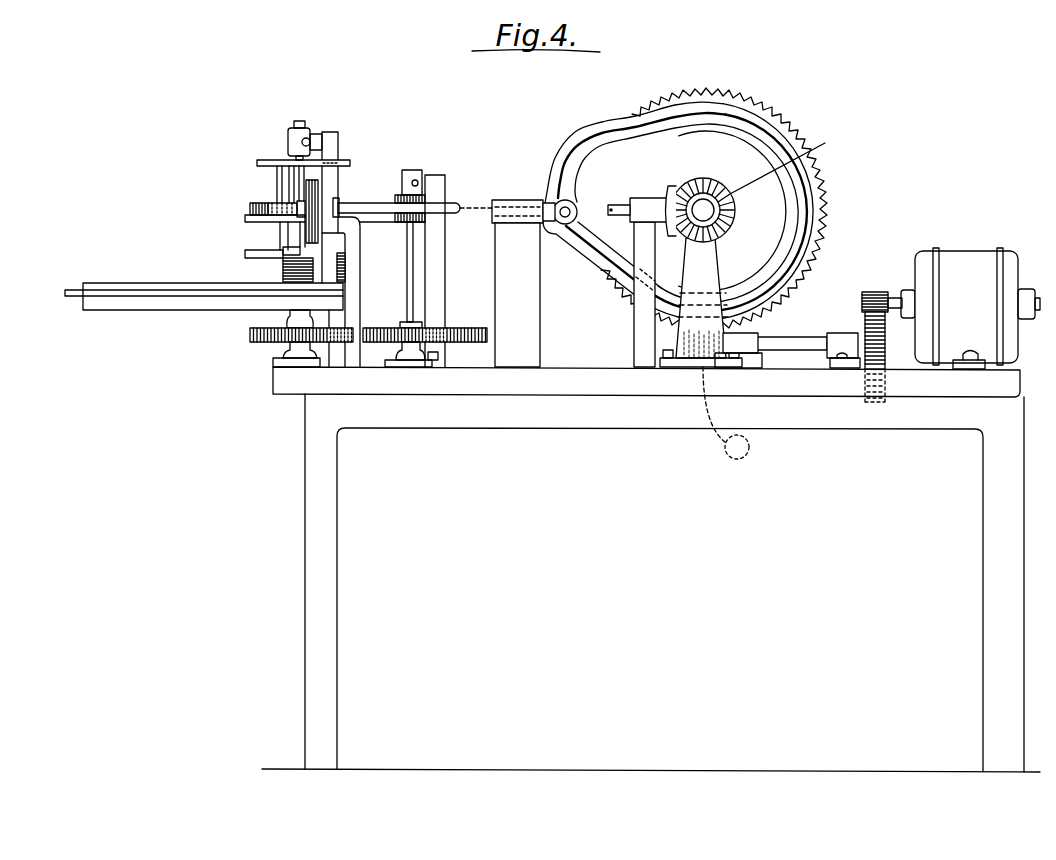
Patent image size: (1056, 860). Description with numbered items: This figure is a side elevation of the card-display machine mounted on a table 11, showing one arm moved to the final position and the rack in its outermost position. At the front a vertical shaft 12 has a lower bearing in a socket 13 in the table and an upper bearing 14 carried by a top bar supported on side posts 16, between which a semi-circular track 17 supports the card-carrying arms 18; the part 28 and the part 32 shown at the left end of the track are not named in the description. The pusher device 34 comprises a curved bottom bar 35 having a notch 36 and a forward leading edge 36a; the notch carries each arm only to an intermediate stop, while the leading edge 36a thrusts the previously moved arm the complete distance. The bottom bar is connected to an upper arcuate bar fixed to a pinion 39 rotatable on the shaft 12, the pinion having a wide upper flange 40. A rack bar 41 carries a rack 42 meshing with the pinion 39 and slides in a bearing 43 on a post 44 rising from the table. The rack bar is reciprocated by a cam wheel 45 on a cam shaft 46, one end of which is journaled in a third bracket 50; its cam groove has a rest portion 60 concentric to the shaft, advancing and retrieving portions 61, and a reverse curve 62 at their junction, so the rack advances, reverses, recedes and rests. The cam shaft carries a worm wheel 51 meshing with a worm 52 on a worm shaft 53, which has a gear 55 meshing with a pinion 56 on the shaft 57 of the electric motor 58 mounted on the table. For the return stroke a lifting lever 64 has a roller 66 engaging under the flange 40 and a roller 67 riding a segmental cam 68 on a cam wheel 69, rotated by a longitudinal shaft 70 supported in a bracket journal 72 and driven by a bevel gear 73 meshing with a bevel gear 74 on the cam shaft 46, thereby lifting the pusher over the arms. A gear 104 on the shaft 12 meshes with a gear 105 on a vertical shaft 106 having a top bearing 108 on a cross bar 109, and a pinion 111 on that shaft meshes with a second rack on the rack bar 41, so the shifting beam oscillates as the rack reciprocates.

The table 11 is at (599, 440).
The vertical shaft 12 is at (305, 122).
The socket 13 is at (291, 352).
The upper bearing 14 is at (288, 137).
The side posts 16 is at (338, 180).
The semi-circular track 17 is at (157, 304).
The arms 18 is at (280, 271).
The plate 28 is at (106, 286).
The rod 32 is at (100, 294).
The pusher device 34 is at (237, 223).
The curved bottom bar 35 is at (245, 254).
The notch 36 is at (284, 264).
The forward or leading edge 36a is at (338, 254).
The pinion 39 is at (290, 178).
The upper flange 40 is at (345, 163).
The rack bar 41 is at (370, 203).
The rack 42 is at (250, 206).
The bearing 43 is at (511, 200).
The post 44 is at (530, 301).
The cam wheel 45 is at (737, 209).
The cam shaft 46 is at (797, 162).
The third bracket 50 is at (703, 272).
The worm wheel 51 is at (790, 123).
The worm 52 is at (731, 413).
The worm shaft 53 is at (777, 338).
The gear 55 is at (878, 345).
The pinion 56 is at (876, 292).
The shaft 57 is at (892, 296).
The electric motor 58 is at (950, 262).
The rest portion 60 is at (790, 233).
The advancing and retrieving portions 61 is at (663, 127).
The reverse curve 62 is at (571, 162).
The lifting lever 64 is at (298, 213).
The roller 66 is at (265, 204).
The roller 67 is at (318, 200).
The segmental cam 68 is at (279, 198).
The cam wheel 69 is at (345, 236).
The longitudinal shaft 70 is at (446, 208).
The bracket journal 72 is at (647, 300).
The bevel gear 73 is at (675, 190).
The bevel gear 74 is at (705, 192).
The gear 104 is at (252, 334).
The gear 105 is at (468, 331).
The vertical shaft 106 is at (409, 306).
The top bearing 108 is at (425, 176).
The cross bar 109 is at (440, 270).
The pinion 111 is at (394, 197).